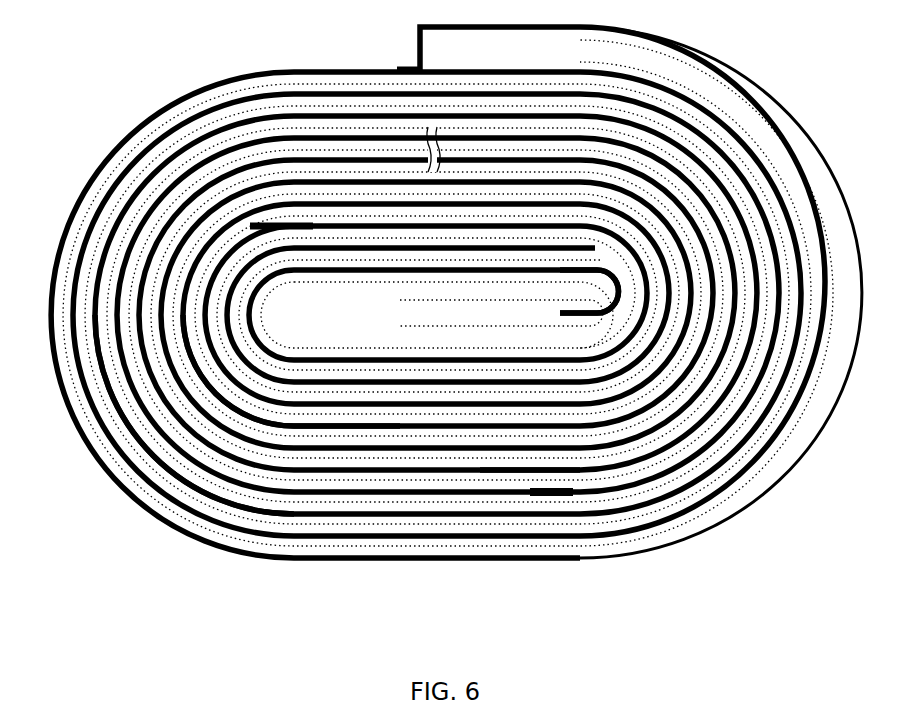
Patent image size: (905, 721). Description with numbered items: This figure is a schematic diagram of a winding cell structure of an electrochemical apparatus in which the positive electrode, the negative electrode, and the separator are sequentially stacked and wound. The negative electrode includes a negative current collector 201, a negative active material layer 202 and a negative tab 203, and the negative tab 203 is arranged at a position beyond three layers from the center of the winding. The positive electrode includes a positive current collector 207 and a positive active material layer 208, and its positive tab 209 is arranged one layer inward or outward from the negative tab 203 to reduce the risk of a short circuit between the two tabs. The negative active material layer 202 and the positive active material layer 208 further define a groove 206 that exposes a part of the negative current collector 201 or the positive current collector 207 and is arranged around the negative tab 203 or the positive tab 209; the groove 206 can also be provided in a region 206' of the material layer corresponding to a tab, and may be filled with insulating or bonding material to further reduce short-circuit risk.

The negative current collector 201 is at (567, 315).
The negative active material layer 202 is at (733, 440).
The negative tab 203 is at (552, 493).
The groove 206 is at (449, 324).
The region of the positive or negative material layer corresponding to the tab 206' is at (508, 552).
The positive current collector 207 is at (130, 433).
The positive active material layer 208 is at (225, 410).
The positive tab 209 is at (323, 427).